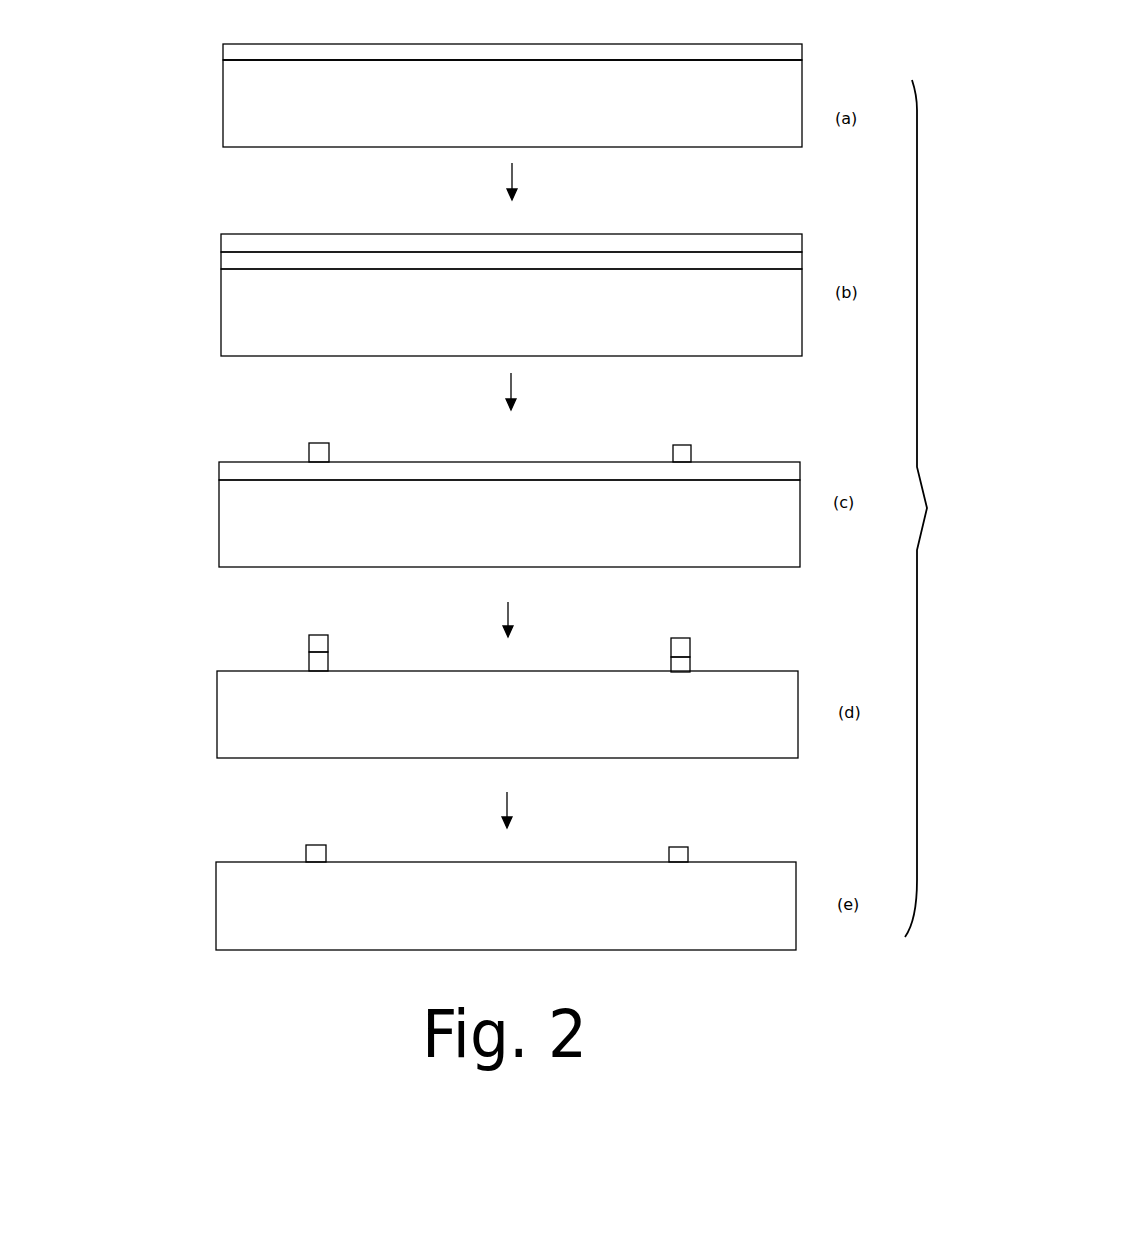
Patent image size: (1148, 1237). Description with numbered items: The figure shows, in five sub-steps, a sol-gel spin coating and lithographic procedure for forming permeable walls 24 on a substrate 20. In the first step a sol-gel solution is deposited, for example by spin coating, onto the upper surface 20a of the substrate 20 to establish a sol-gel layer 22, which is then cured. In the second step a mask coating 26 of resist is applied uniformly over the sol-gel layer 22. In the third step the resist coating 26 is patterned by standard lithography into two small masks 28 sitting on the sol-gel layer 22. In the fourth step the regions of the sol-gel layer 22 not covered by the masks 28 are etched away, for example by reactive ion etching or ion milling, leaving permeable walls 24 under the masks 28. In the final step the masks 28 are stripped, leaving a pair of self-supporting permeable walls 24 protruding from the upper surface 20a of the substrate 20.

The substrate 20 is at (257, 128).
The upper surface of substrate 20a is at (240, 57).
The sol-gel layer 22 is at (770, 43).
The permeable walls 24 is at (328, 653).
The mask coating 26 is at (221, 235).
The masks 28 is at (308, 443).